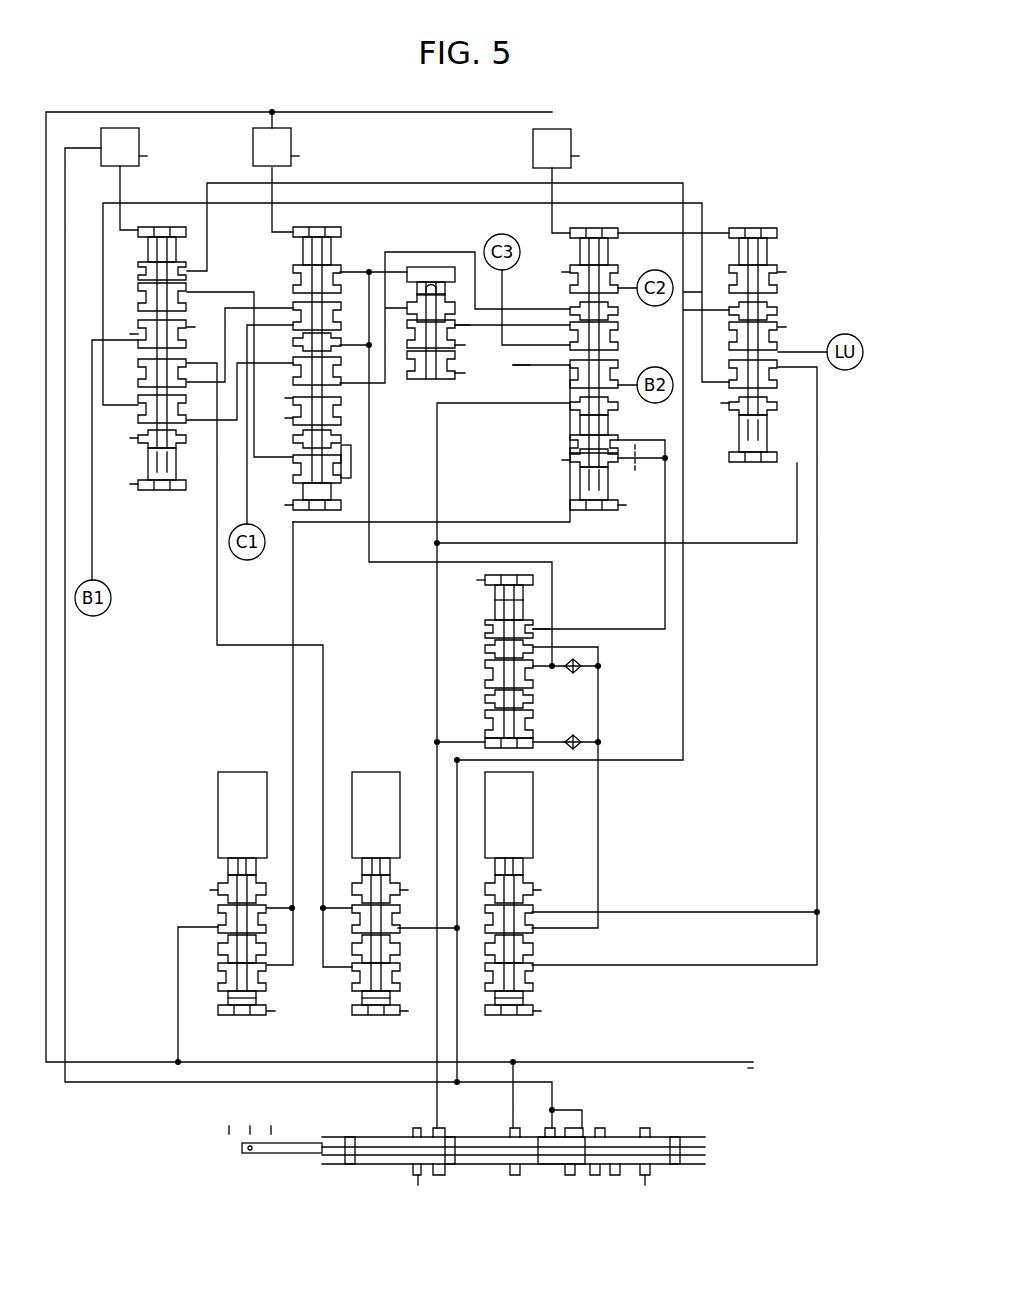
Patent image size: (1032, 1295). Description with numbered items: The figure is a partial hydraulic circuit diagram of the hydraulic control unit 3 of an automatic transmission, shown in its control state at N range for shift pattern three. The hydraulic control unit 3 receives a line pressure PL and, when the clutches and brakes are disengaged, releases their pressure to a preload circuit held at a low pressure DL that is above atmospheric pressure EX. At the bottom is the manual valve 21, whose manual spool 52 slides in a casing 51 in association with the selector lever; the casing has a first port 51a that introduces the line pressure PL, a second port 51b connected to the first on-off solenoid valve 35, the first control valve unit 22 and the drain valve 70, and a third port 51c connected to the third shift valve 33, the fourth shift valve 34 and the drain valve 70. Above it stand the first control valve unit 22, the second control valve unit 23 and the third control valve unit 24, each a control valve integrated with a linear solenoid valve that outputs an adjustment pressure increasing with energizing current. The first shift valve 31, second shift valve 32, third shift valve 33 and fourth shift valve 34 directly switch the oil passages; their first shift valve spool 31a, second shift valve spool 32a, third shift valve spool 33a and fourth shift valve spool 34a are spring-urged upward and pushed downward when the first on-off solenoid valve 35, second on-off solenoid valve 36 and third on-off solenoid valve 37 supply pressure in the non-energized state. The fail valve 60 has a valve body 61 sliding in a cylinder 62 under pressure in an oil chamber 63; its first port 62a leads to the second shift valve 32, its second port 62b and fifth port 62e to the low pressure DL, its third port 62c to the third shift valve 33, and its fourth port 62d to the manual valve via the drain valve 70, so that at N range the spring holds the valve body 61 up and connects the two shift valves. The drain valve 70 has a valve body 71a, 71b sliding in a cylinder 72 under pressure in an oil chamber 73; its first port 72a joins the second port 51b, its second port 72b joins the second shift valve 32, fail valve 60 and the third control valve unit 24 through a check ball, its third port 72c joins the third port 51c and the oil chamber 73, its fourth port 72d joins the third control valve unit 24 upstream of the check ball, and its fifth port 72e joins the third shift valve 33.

The hydraulic control unit 3 is at (737, 148).
The manual valve 21 is at (700, 1172).
The first control valve unit 22 is at (367, 772).
The second control valve unit 23 is at (235, 772).
The third control valve unit 24 is at (533, 815).
The first shift valve 31 is at (163, 349).
The first shift valve spool 31a is at (175, 262).
The second shift valve 32 is at (311, 360).
The second shift valve spool 32a is at (298, 345).
The third shift valve 33 is at (605, 360).
The third shift valve spool 33a is at (600, 283).
The fourth shift valve 34 is at (770, 332).
The fourth shift valve spool 34a is at (760, 283).
The first on-off solenoid valve 35 is at (141, 133).
The second on-off solenoid valve 36 is at (292, 133).
The third on-off solenoid valve 37 is at (572, 133).
The casing 51 is at (481, 1151).
The first port 51a is at (507, 1128).
The second port 51b is at (537, 1116).
The third port 51c is at (432, 1128).
The manual spool 52 is at (285, 1158).
The fail valve 60 is at (450, 444).
The valve body 61 is at (437, 378).
The cylinder 62 is at (455, 298).
The first port 62a is at (395, 266).
The second port 62b is at (522, 386).
The third port 62c is at (488, 320).
The fourth port 62d is at (410, 270).
The oil chamber 63 is at (428, 275).
The fifth port 62e is at (462, 377).
The drain valve 70 is at (506, 677).
The valve body 71a is at (505, 628).
The valve body 71b is at (505, 720).
The cylinder 72 is at (505, 720).
The first port 72a is at (488, 675).
The second port 72b is at (533, 670).
The third port 72c is at (490, 726).
The fourth port 72d is at (520, 740).
The fifth port 72e is at (538, 633).
The oil chamber 73 is at (520, 750).